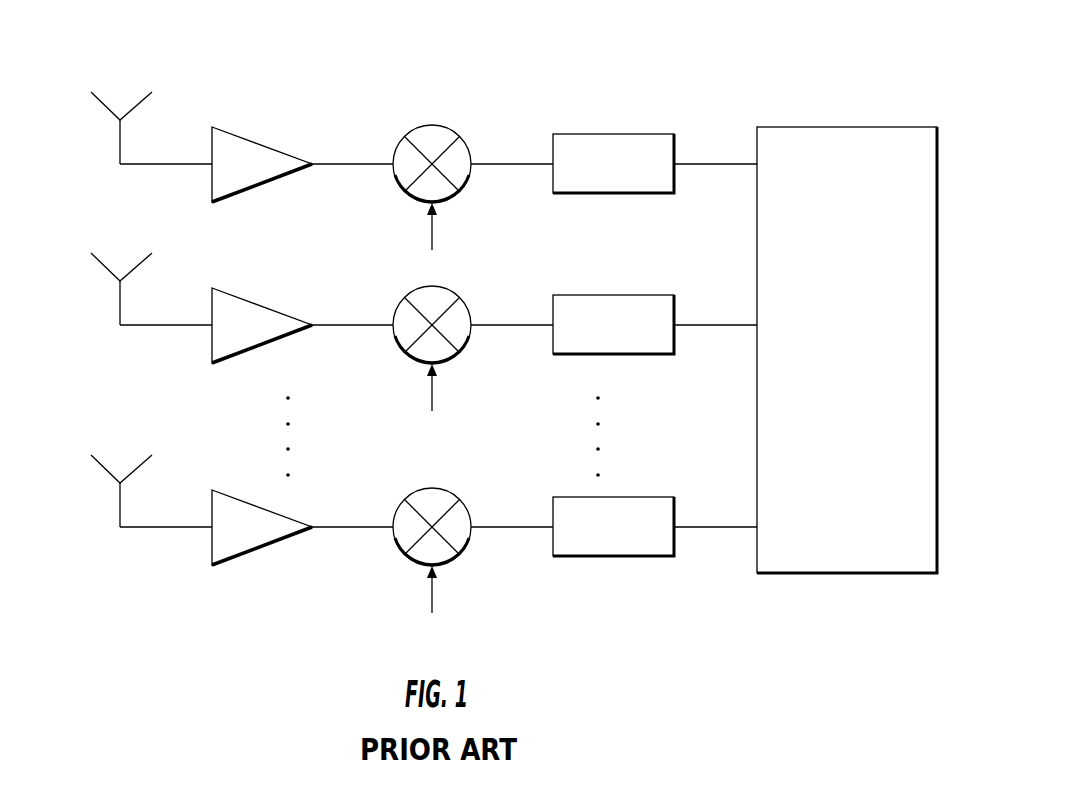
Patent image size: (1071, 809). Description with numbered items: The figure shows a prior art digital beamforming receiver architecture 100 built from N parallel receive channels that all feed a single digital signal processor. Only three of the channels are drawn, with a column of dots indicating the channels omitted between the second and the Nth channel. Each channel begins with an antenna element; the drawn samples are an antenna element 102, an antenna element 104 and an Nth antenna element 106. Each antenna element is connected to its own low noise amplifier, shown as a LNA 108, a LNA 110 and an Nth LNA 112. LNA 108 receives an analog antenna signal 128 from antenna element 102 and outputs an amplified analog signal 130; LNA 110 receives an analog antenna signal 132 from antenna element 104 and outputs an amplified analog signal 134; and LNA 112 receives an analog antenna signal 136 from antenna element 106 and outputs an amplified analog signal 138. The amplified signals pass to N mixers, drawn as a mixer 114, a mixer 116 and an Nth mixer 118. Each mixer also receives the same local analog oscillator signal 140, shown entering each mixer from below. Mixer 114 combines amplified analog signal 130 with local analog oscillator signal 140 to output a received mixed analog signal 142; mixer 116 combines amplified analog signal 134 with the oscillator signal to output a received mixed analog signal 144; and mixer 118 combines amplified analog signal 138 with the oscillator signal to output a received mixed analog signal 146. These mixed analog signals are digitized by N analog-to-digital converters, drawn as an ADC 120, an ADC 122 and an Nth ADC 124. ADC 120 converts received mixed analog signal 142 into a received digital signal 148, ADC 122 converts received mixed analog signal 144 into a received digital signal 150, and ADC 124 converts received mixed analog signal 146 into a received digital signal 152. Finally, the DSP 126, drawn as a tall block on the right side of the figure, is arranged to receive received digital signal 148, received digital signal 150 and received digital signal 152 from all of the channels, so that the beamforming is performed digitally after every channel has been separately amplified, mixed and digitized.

The DBF receiver architecture 100 is at (116, 69).
The antenna element 102 is at (103, 106).
The antenna element 104 is at (97, 289).
The Nth antenna element 106 is at (97, 491).
The LNA 108 is at (212, 180).
The LNA 110 is at (230, 333).
The Nth LNA 112 is at (230, 535).
The mixer 114 is at (392, 178).
The mixer 116 is at (398, 332).
The Nth mixer 118 is at (398, 534).
The ADC 120 is at (552, 178).
The ADC 122 is at (582, 336).
The Nth ADC 124 is at (582, 538).
The DSP 126 is at (833, 175).
The analog antenna signal 128 is at (122, 152).
The amplified analog signal 130 is at (330, 163).
The analog antenna signal 132 is at (166, 298).
The amplified analog signal 134 is at (352, 294).
The analog antenna signal 136 is at (166, 500).
The amplified analog signal 138 is at (352, 496).
The local analog oscillator signal 140 is at (430, 222).
The received mixed analog signal 142 is at (490, 163).
The received mixed analog signal 144 is at (512, 294).
The received mixed analog signal 146 is at (512, 496).
The received digital signal 148 is at (693, 164).
The received digital signal 150 is at (715, 295).
The received digital signal 152 is at (715, 497).